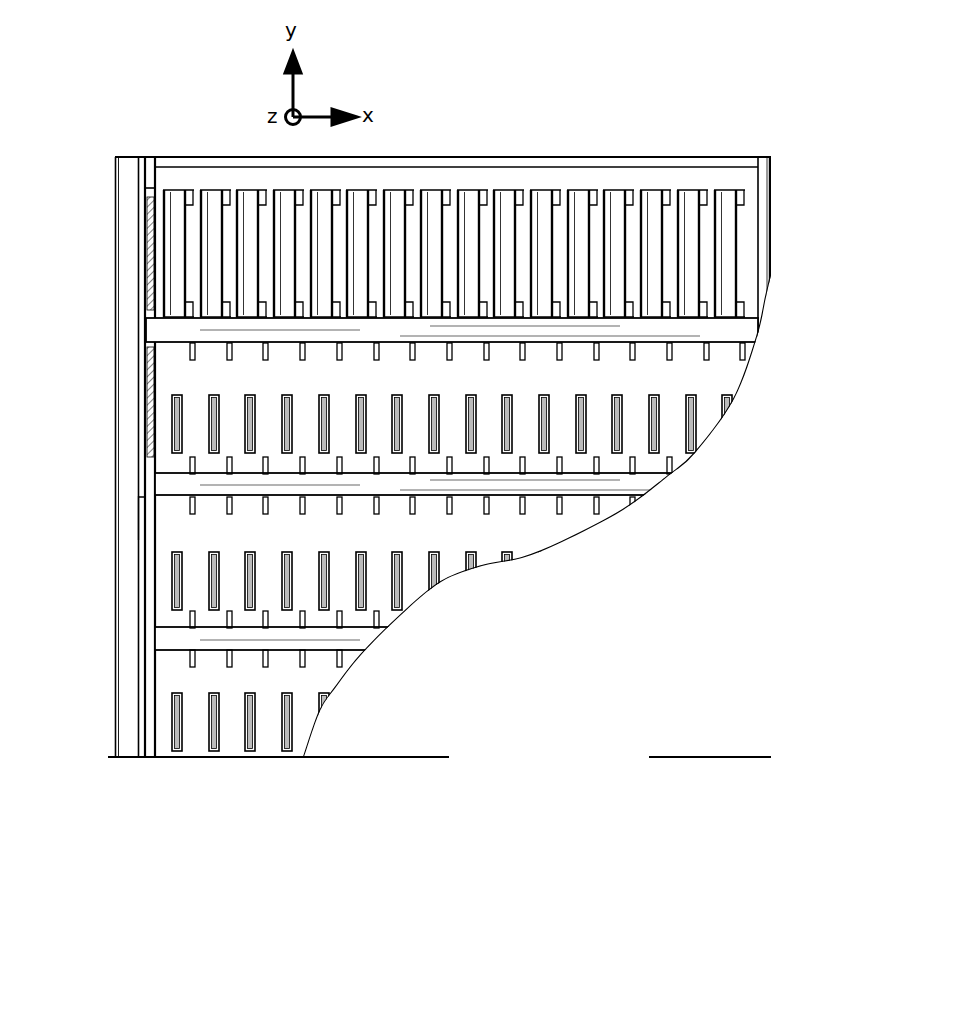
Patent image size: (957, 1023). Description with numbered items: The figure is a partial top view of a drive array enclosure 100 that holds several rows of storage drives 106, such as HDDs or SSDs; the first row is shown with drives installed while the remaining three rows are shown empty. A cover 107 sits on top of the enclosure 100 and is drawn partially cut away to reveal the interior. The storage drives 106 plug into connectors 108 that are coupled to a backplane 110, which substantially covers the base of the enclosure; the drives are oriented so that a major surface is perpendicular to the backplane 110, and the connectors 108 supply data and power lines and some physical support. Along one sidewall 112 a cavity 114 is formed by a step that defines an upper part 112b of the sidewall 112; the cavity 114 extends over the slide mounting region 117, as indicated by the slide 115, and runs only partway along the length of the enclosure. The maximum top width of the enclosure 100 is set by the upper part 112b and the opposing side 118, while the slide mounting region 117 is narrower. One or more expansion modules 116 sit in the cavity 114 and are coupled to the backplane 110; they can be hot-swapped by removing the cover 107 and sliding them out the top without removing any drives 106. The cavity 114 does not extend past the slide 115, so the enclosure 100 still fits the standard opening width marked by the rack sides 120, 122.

The drive array enclosure 100 is at (459, 104).
The storage drives 106 is at (248, 203).
The cover 107 is at (657, 745).
The connectors 108 is at (207, 405).
The backplane 110 is at (162, 722).
The sidewall 112 is at (145, 585).
The upper part of the sidewall 112b is at (140, 222).
The cavity 114 is at (147, 313).
The slide 115 is at (141, 155).
The expansion modules 116 is at (148, 262).
The slide mounting region 117 is at (145, 505).
The opposing side 118 is at (772, 170).
The side of a rack 120 is at (118, 155).
The side of a rack 122 is at (795, 154).